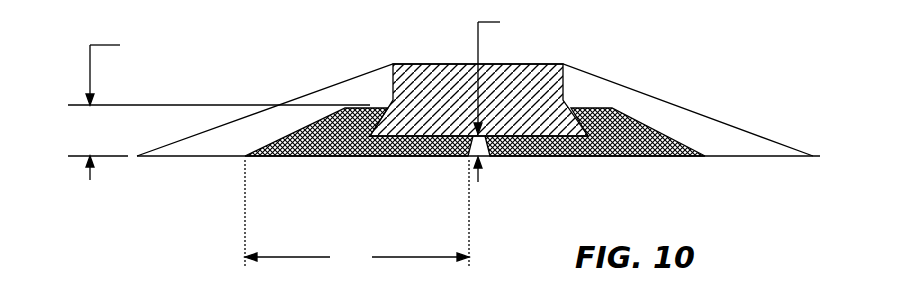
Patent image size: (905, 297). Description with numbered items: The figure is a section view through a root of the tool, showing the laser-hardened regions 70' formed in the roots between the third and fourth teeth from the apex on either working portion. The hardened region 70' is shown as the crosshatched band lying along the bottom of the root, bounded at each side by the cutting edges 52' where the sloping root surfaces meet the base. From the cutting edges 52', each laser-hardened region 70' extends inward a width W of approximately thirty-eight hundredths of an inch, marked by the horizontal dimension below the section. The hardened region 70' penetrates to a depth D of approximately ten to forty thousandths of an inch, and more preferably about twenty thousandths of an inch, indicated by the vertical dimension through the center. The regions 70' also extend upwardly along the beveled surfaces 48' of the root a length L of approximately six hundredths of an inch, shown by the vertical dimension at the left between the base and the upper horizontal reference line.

The beveled surface 48' is at (475, 95).
The cutting edge 52' is at (469, 169).
The laser-hardened region 70' is at (478, 178).
The length L is at (219, 108).
The depth D is at (496, 98).
The width W is at (357, 215).